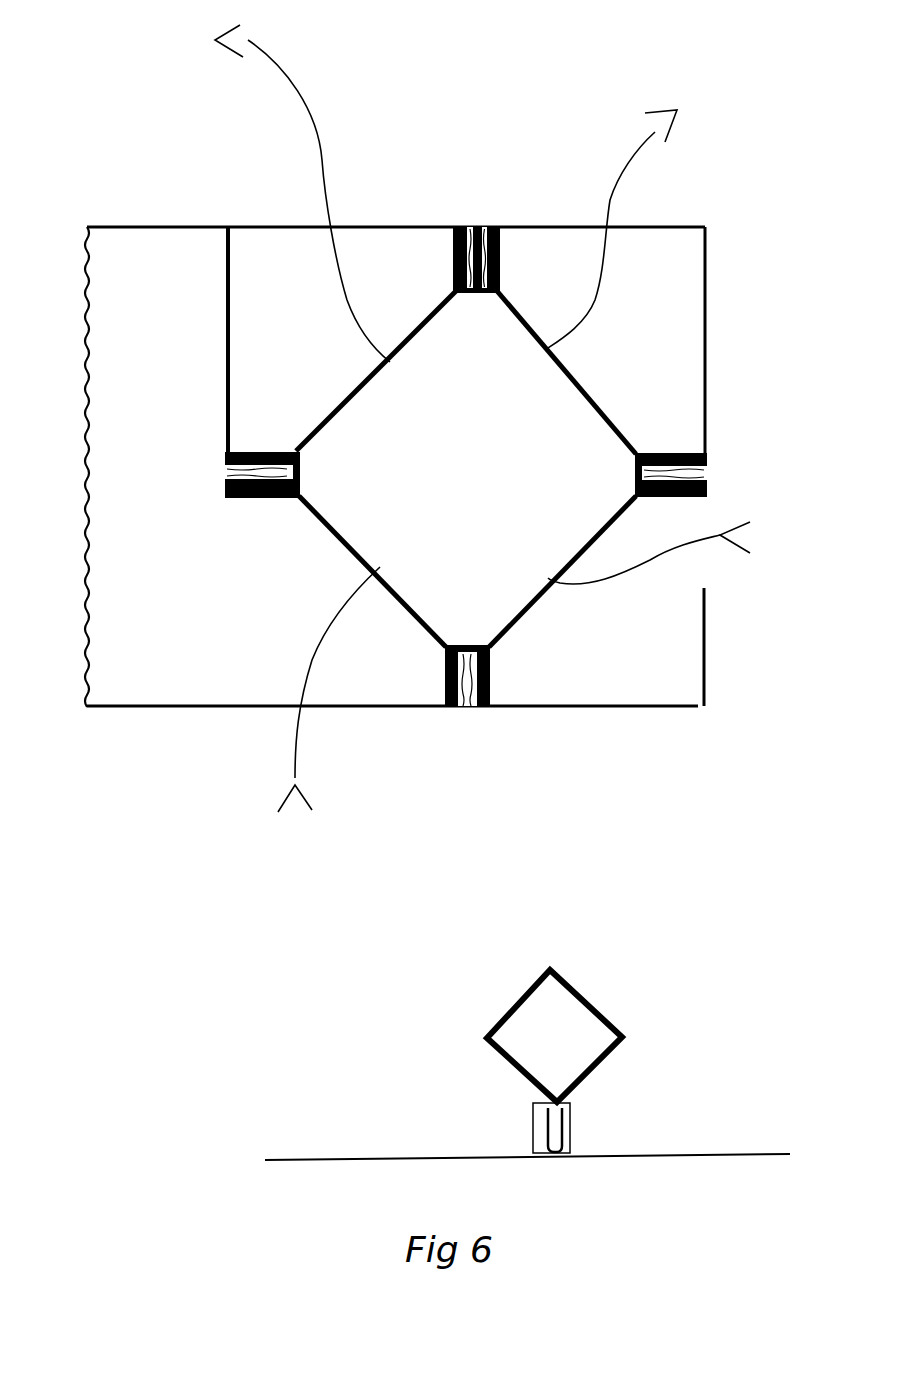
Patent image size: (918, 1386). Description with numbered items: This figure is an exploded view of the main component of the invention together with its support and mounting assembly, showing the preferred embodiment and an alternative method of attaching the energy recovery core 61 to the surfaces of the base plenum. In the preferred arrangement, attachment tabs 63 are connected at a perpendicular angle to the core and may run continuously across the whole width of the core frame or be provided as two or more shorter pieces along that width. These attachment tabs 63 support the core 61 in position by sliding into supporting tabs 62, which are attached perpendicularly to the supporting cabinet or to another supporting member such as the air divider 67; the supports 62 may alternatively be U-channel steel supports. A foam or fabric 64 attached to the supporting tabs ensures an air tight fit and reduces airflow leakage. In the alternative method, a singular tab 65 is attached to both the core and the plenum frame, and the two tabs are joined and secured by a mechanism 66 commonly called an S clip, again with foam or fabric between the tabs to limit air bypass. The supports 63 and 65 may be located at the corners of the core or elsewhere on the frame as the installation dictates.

The energy recovery core 61 is at (466, 696).
The supporting tabs 62 is at (491, 214).
The attachment tabs 63 is at (492, 668).
The foam or fabric 64 is at (500, 240).
The singular tab 65 is at (560, 1155).
The S clip mechanism 66 is at (530, 1132).
The air divider 67 is at (226, 350).